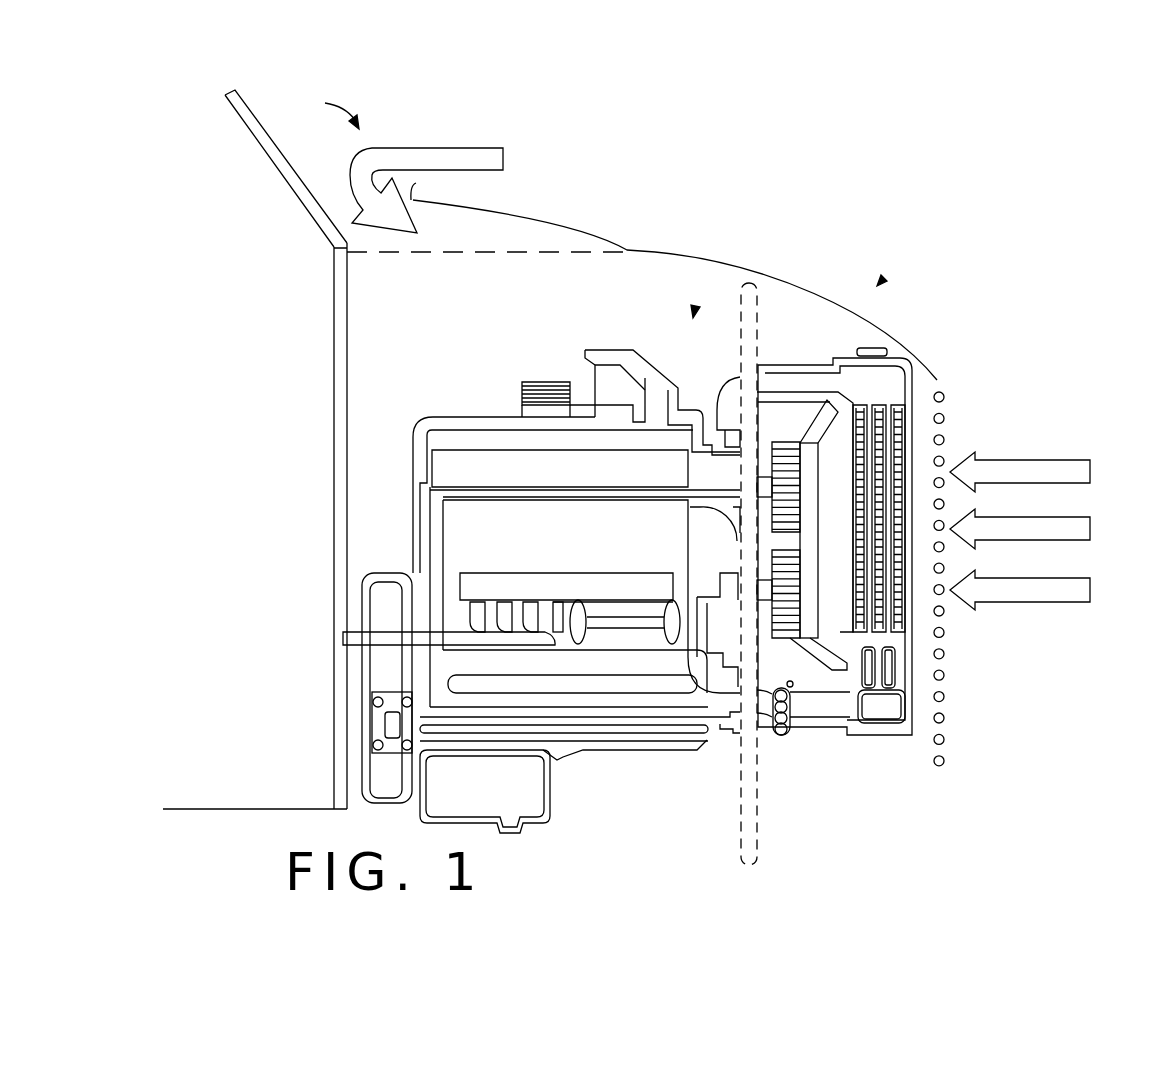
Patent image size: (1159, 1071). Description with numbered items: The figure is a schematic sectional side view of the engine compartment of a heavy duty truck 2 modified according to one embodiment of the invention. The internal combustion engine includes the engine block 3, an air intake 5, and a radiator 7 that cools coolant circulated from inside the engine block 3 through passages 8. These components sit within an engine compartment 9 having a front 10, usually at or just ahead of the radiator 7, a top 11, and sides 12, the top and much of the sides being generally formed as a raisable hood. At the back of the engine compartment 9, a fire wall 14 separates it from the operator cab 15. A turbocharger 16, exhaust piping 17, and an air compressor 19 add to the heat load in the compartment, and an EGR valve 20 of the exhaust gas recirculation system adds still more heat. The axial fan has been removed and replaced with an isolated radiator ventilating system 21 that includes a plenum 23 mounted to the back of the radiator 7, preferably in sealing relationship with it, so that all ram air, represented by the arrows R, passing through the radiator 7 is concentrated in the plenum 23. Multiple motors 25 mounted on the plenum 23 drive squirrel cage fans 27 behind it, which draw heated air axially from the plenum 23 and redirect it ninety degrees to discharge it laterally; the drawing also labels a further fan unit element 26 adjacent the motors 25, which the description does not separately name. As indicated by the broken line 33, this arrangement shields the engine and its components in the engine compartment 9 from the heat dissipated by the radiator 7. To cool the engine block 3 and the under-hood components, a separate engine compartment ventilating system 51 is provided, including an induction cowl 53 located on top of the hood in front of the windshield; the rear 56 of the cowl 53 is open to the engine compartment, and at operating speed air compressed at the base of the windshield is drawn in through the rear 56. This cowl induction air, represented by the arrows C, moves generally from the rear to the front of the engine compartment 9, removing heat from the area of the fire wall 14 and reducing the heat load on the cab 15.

The heavy duty truck 2 is at (880, 282).
The engine block 3 is at (490, 540).
The air intake 5 is at (637, 378).
The radiator 7 is at (878, 380).
The passages 8 is at (781, 380).
The engine compartment 9 is at (695, 312).
The front 10 is at (918, 362).
The top 11 is at (647, 250).
The sides 12 is at (596, 311).
The fire wall 14 is at (335, 452).
The operator cab 15 is at (268, 343).
The turbocharger 16 is at (620, 632).
The exhaust piping 17 is at (540, 612).
The air compressor 19 is at (722, 637).
The EGR valve 20 is at (538, 383).
The isolated radiator ventilating system 21 is at (857, 707).
The plenum 23 is at (830, 483).
The motors 25 is at (757, 485).
The fan motor core 26 is at (783, 460).
The squirrel cage fans 27 is at (800, 440).
The broken line 33 is at (760, 857).
The engine compartment ventilating system 51 is at (327, 109).
The induction cowl 53 is at (585, 222).
The rear of the cowl 56 is at (416, 183).
The cowl induction air arrows C is at (442, 150).
The ram air arrows R is at (1090, 593).